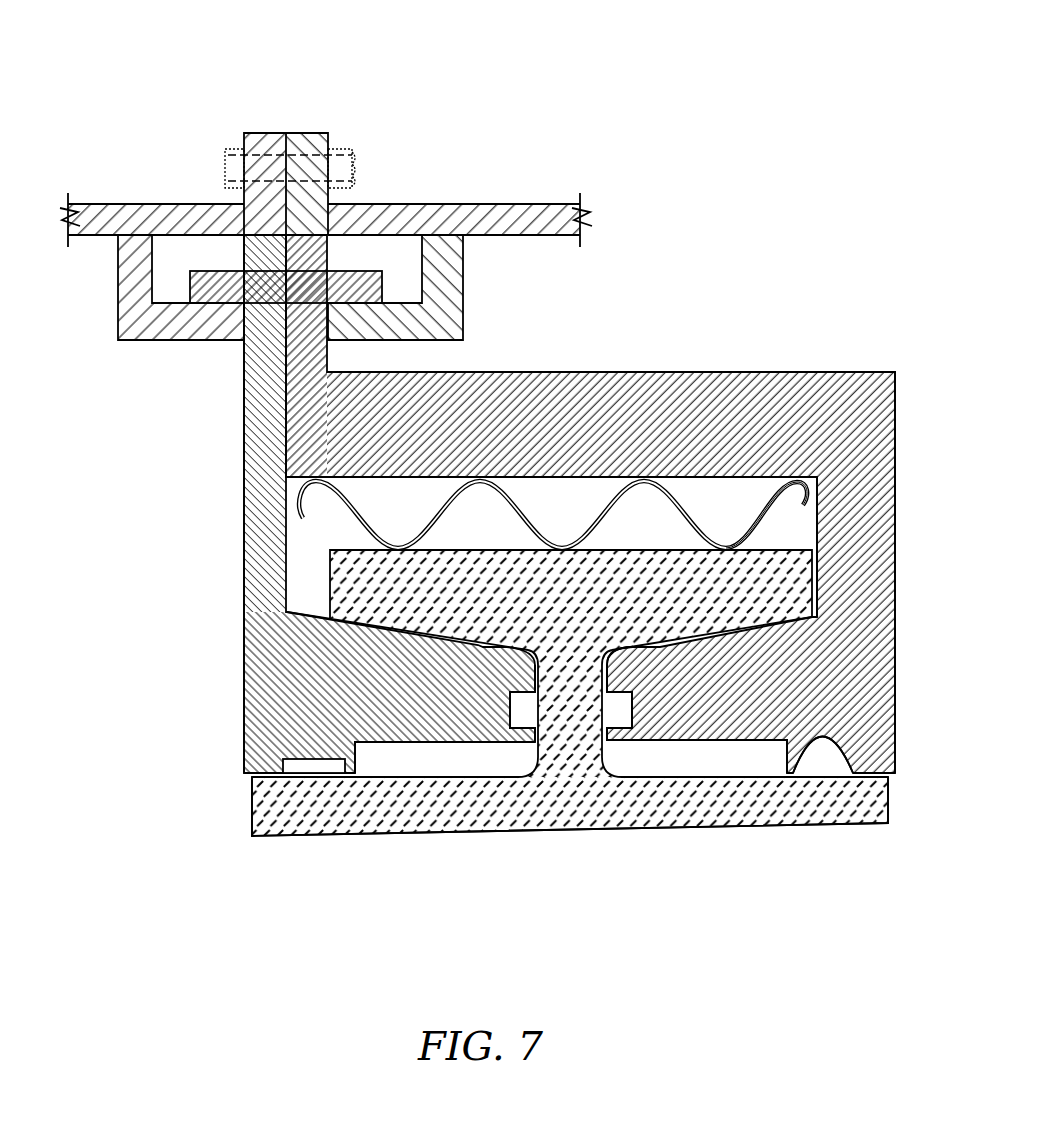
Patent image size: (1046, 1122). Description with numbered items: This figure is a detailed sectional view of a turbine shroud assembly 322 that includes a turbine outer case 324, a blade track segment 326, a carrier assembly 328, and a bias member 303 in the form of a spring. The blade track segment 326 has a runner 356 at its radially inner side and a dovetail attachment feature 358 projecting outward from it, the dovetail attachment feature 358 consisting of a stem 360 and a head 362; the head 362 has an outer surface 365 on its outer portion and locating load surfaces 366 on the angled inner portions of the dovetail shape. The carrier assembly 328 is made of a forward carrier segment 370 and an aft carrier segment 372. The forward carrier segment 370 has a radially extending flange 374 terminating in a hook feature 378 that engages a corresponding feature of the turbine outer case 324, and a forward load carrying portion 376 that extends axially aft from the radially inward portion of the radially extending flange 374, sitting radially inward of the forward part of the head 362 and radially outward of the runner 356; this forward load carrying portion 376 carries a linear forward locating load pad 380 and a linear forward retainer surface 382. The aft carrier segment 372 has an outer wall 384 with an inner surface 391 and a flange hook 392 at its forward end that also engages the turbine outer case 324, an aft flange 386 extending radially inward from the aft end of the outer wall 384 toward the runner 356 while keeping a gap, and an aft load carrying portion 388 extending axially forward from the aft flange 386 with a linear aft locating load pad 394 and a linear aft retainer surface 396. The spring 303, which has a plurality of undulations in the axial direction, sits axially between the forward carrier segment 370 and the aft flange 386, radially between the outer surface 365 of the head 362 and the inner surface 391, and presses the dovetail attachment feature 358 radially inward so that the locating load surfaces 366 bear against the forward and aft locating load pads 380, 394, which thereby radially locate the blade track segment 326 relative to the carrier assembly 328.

The turbine shroud assembly 322 is at (548, 125).
The turbine outer case 324 is at (183, 127).
The blade track segment 326 is at (737, 852).
The carrier assembly 328 is at (708, 270).
The bias member 303 is at (767, 510).
The runner 356 is at (817, 810).
The dovetail attachment feature 358 is at (563, 723).
The stem 360 is at (582, 707).
The head 362 is at (772, 585).
The outer surface 365 is at (490, 547).
The locating load surfaces 366 is at (428, 635).
The forward carrier segment 370 is at (210, 530).
The aft carrier segment 372 is at (803, 300).
The radially extending flange 374 is at (265, 462).
The forward load carrying portion 376 is at (422, 708).
The hook feature 378 is at (217, 280).
The linear forward locating load pad 380 is at (487, 643).
The linear forward retainer surface 382 is at (545, 650).
The outer wall 384 is at (548, 405).
The aft flange 386 is at (857, 562).
The aft load carrying portion 388 is at (805, 742).
The inner surface 391 is at (695, 485).
The flange hook 392 is at (355, 285).
The linear aft locating load pad 394 is at (713, 638).
The linear aft retainer surface 396 is at (755, 708).